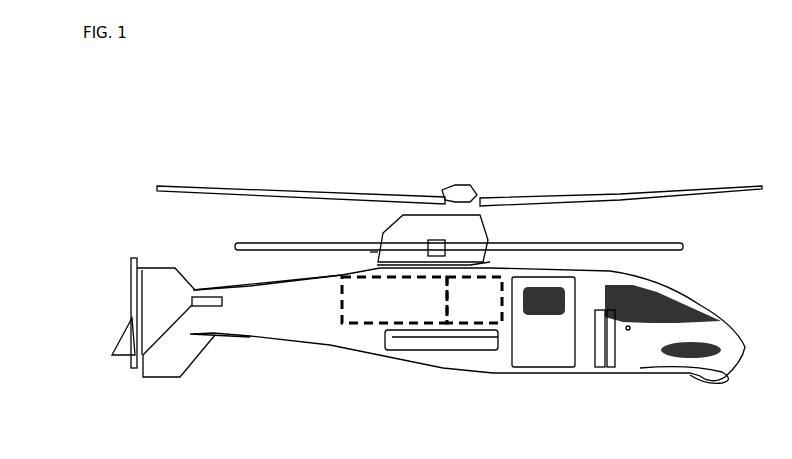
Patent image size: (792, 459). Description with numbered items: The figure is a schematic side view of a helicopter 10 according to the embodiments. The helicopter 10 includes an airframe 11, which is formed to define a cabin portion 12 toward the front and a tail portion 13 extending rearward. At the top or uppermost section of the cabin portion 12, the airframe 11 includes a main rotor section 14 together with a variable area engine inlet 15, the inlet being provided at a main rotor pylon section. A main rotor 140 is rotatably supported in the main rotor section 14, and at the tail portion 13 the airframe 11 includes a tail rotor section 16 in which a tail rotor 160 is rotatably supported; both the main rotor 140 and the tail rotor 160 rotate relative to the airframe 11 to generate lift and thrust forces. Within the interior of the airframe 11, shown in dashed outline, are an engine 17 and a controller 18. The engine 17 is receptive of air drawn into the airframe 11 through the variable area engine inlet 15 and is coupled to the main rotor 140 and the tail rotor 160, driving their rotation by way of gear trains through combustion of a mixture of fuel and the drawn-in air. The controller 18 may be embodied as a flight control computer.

The helicopter 10 is at (150, 152).
The airframe 11 is at (315, 345).
The cabin portion 12 is at (508, 343).
The tail portion 13 is at (262, 325).
The main rotor section 14 is at (457, 228).
The variable area engine inlet 15 is at (502, 262).
The tail rotor section 16 is at (121, 312).
The engine 17 is at (394, 300).
The controller 18 is at (474, 300).
The main rotor 140 is at (459, 189).
The tail rotor 160 is at (136, 259).